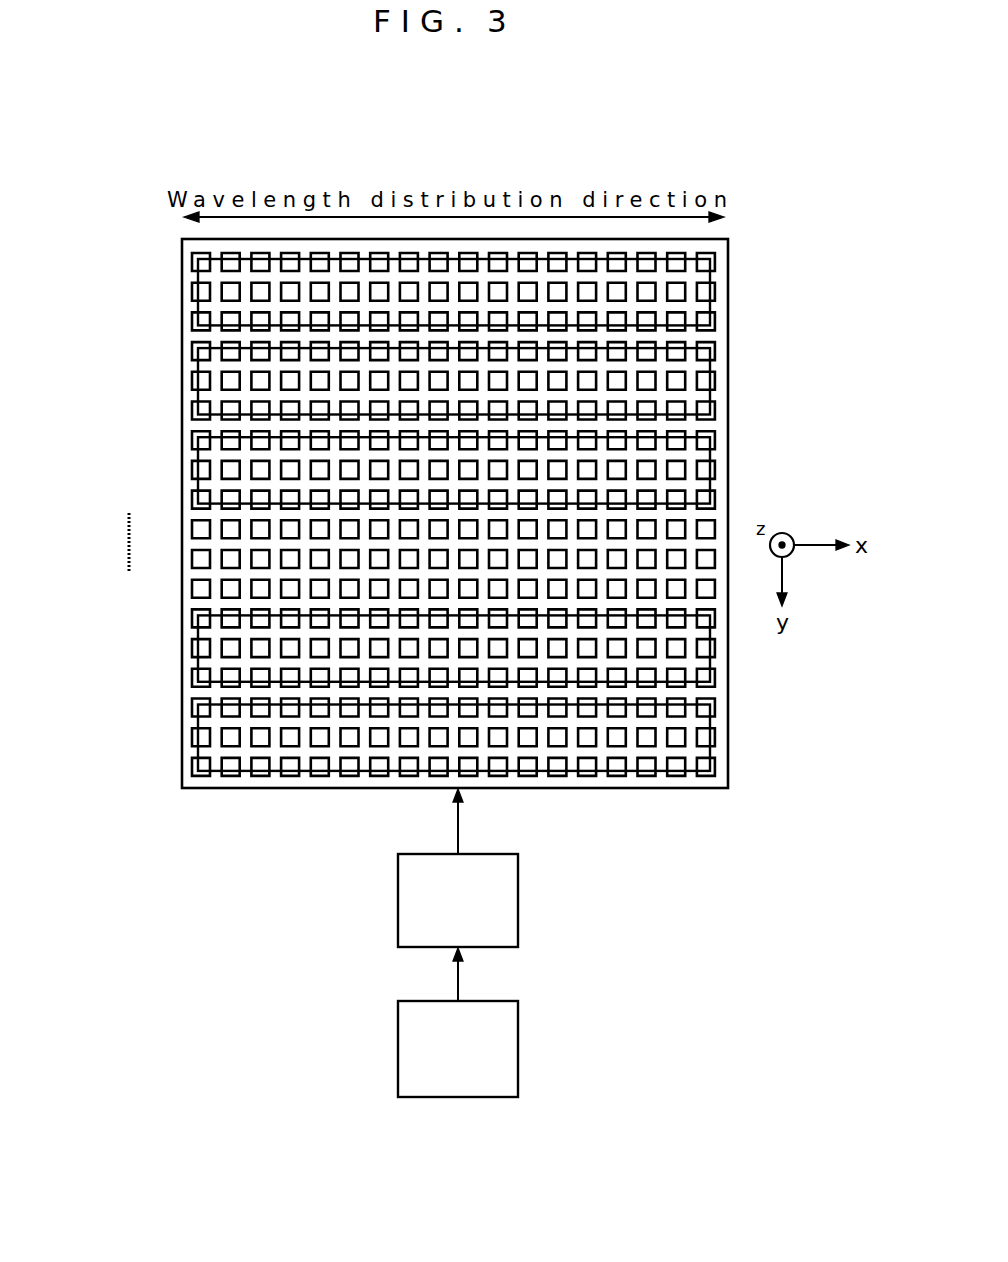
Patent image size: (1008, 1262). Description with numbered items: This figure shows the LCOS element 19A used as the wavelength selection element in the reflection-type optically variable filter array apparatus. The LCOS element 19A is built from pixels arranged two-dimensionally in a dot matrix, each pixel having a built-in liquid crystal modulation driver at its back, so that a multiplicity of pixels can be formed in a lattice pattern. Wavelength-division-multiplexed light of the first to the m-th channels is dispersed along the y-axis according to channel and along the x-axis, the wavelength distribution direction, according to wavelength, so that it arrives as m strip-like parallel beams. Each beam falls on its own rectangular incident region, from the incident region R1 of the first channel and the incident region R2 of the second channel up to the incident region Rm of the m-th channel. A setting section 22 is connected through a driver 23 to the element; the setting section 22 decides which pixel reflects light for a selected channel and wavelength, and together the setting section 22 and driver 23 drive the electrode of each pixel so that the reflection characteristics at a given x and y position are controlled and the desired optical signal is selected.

The LCOS element 19A is at (728, 277).
The incident region Rm is at (198, 303).
The incident region R2 is at (198, 660).
The incident region R1 is at (198, 748).
The driver 23 is at (398, 900).
The setting section 22 is at (398, 1048).